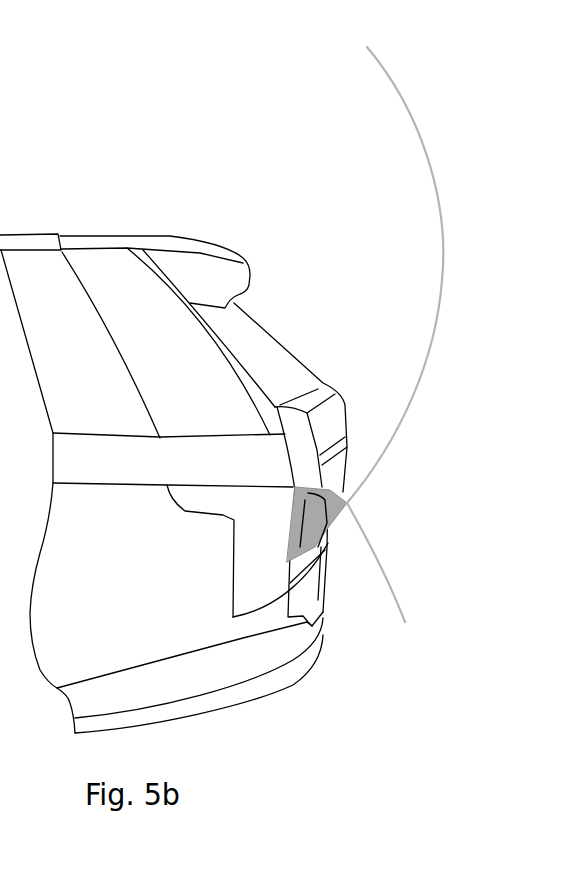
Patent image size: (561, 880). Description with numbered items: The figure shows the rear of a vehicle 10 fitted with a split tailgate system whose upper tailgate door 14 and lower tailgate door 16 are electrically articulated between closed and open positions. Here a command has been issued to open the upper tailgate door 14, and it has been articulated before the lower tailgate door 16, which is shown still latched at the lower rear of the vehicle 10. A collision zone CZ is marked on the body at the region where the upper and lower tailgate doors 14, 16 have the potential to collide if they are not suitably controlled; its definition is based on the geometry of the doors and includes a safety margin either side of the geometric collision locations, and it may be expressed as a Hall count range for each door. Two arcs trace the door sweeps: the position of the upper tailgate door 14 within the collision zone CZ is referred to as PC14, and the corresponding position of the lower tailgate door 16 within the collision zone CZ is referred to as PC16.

The vehicle 10 is at (118, 605).
The upper tailgate door 14 is at (246, 328).
The lower tailgate door 16 is at (308, 573).
The collision zone CZ is at (307, 518).
The position of the upper tailgate door within the collision zone PC14 is at (347, 500).
The position of the lower tailgate door within the collision zone PC16 is at (345, 542).